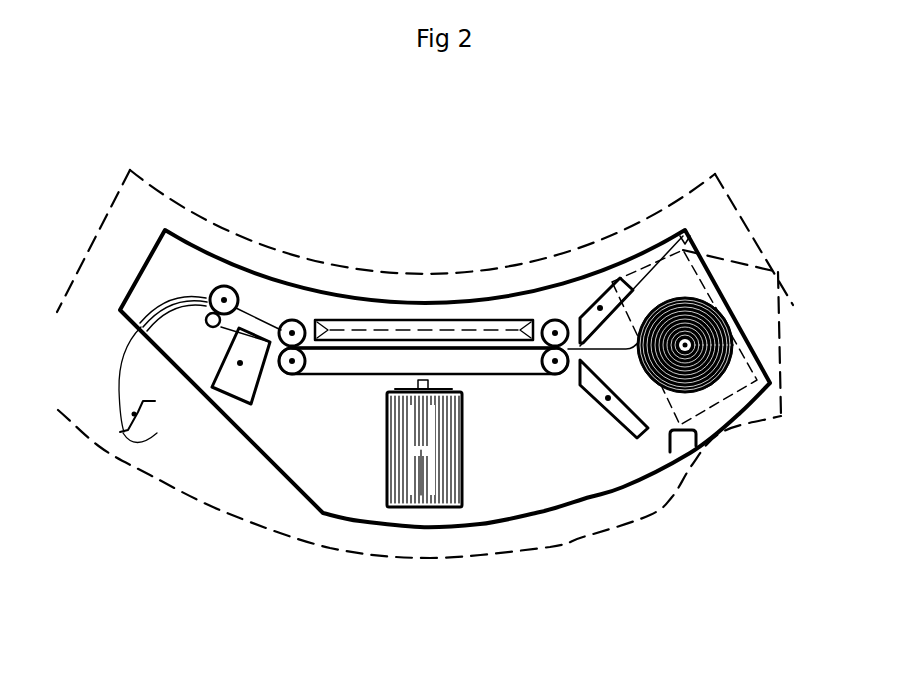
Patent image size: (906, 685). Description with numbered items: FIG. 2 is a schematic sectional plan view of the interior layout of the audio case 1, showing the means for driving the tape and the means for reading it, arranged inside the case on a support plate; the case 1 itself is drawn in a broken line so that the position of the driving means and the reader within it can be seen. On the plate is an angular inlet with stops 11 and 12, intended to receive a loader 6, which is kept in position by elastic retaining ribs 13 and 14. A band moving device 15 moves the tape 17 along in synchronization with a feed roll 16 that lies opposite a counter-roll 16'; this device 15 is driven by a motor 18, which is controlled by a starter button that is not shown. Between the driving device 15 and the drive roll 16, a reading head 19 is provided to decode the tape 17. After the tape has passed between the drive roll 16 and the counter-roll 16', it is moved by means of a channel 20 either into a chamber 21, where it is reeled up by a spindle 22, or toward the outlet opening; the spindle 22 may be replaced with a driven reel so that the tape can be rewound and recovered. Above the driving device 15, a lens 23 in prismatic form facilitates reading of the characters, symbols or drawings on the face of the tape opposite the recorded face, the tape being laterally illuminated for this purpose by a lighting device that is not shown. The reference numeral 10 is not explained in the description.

The case 1 is at (447, 276).
The loader 6 is at (740, 427).
The paper path guide 10 is at (580, 317).
The stop 11 is at (593, 345).
The stop 12 is at (617, 418).
The elastic retaining rib 13 is at (683, 230).
The elastic retaining rib 14 is at (683, 443).
The band moving device 15 is at (339, 367).
The feed roll 16 is at (222, 380).
The counter-roll 16' is at (245, 246).
The tape 17 is at (705, 312).
The motor 18 is at (420, 505).
The reading head 19 is at (237, 387).
The channel 20 is at (173, 300).
The chamber 21 is at (105, 402).
The spindle 22 is at (123, 432).
The prismatic lens 23 is at (368, 320).